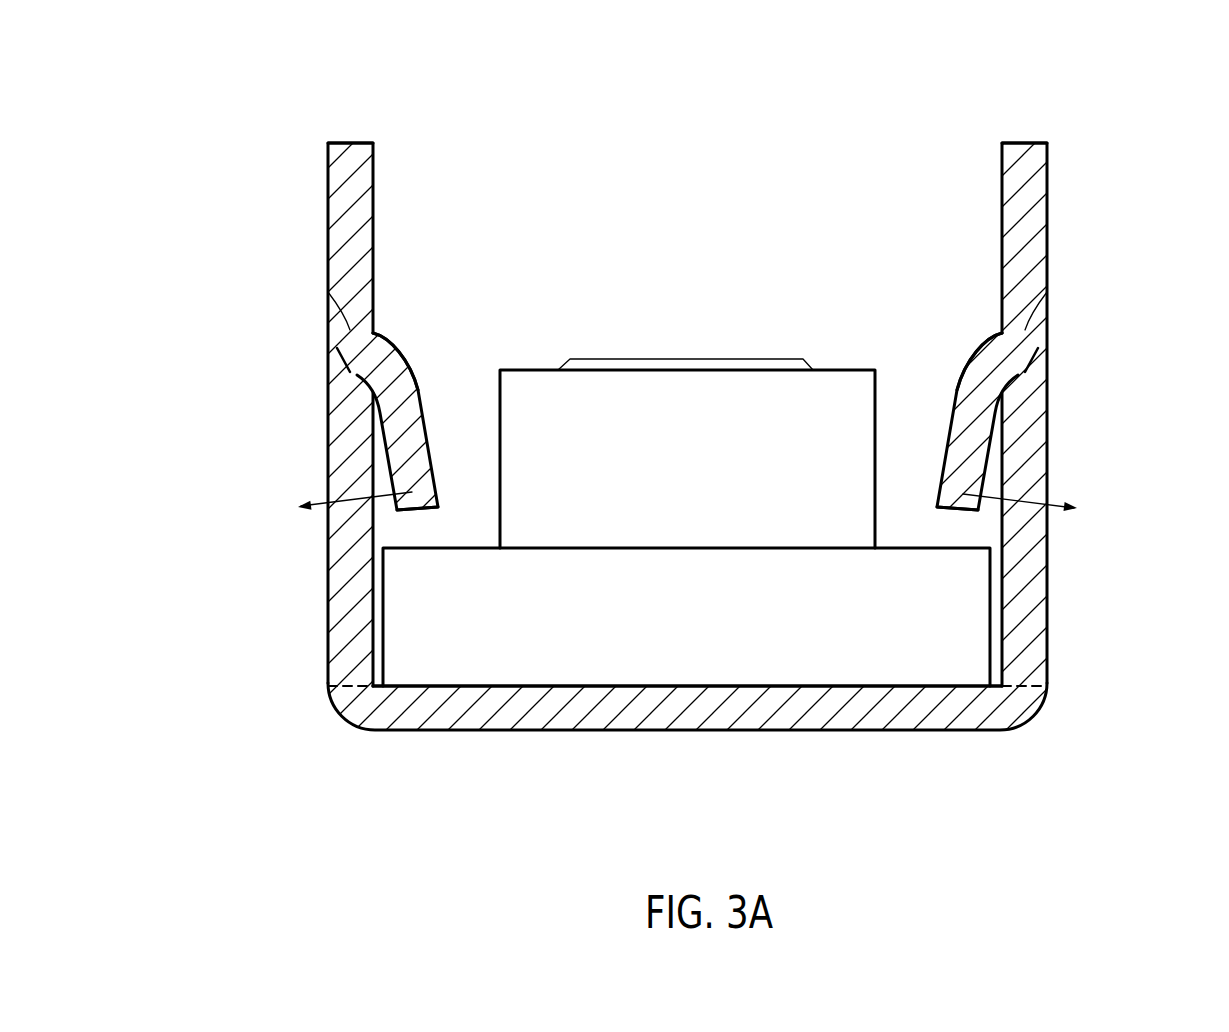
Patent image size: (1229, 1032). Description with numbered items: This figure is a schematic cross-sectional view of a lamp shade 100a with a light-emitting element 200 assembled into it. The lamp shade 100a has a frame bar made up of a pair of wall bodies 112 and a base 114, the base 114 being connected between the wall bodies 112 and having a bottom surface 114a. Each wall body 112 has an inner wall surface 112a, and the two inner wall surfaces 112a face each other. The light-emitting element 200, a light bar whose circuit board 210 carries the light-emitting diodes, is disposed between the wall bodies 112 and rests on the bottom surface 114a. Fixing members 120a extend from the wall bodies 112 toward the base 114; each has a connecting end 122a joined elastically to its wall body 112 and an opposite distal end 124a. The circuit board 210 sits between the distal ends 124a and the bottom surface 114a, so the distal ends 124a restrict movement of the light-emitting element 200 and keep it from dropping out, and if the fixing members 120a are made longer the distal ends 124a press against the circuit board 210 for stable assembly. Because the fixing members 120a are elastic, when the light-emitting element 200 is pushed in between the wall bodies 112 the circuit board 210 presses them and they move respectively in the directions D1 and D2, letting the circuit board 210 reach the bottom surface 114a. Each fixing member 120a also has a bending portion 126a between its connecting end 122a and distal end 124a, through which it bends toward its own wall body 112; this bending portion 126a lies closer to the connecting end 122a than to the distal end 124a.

The lamp shade 100a is at (606, 760).
The wall body 112 is at (337, 210).
The inner wall surface 112a is at (378, 200).
The base 114 is at (903, 712).
The bottom surface 114a is at (713, 686).
The fixing member 120a is at (430, 349).
The connecting end 122a is at (328, 292).
The distal end 124a is at (408, 494).
The bending portion 126a is at (403, 340).
The light-emitting element 200 is at (686, 307).
The circuit board 210 is at (950, 630).
The direction D1 is at (340, 488).
The direction D2 is at (1035, 488).